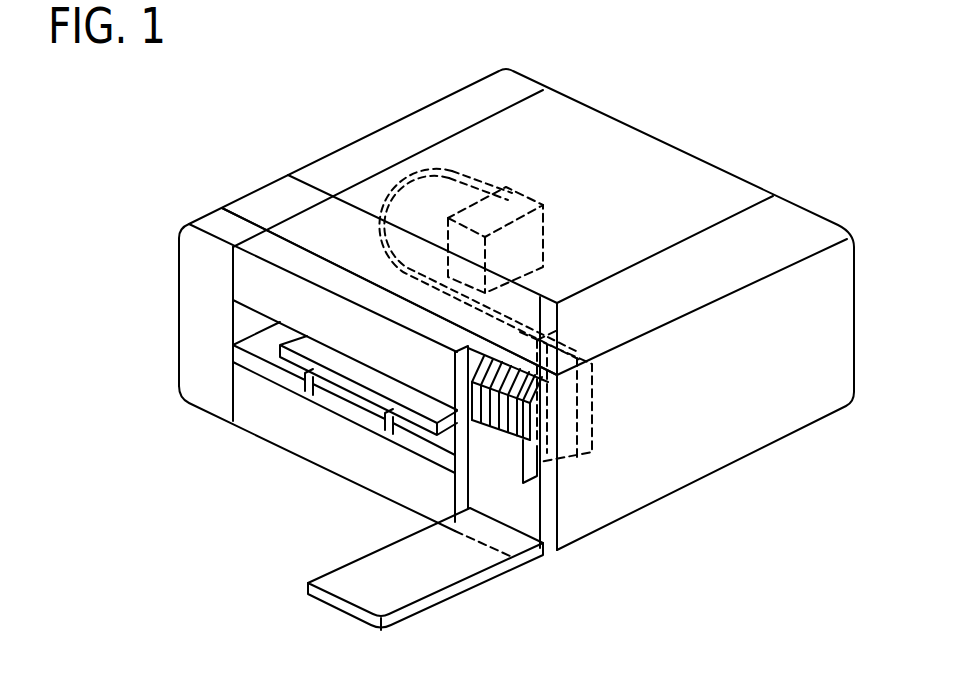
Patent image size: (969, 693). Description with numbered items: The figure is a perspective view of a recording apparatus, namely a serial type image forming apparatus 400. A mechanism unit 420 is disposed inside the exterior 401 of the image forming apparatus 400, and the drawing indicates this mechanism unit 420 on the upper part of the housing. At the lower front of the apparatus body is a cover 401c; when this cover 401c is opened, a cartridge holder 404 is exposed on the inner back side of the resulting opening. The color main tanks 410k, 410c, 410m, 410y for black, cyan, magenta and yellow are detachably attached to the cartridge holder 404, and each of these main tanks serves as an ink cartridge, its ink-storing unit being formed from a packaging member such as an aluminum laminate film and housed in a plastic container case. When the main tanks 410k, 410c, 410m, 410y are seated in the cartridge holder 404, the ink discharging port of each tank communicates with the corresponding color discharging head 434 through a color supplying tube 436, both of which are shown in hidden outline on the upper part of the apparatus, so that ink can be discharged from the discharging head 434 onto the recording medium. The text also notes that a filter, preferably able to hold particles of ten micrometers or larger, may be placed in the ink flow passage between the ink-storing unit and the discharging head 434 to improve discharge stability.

The image forming apparatus 400 is at (769, 95).
The exterior 401 is at (303, 161).
The cover 401c is at (460, 588).
The mechanism unit 420 is at (612, 196).
The supplying tube 436 is at (413, 172).
The discharging head 434 is at (519, 191).
The cartridge holder 404 is at (591, 412).
The main tank 410k is at (478, 422).
The main tank 410c is at (494, 430).
The main tank 410m is at (511, 437).
The main tank 410y is at (527, 442).